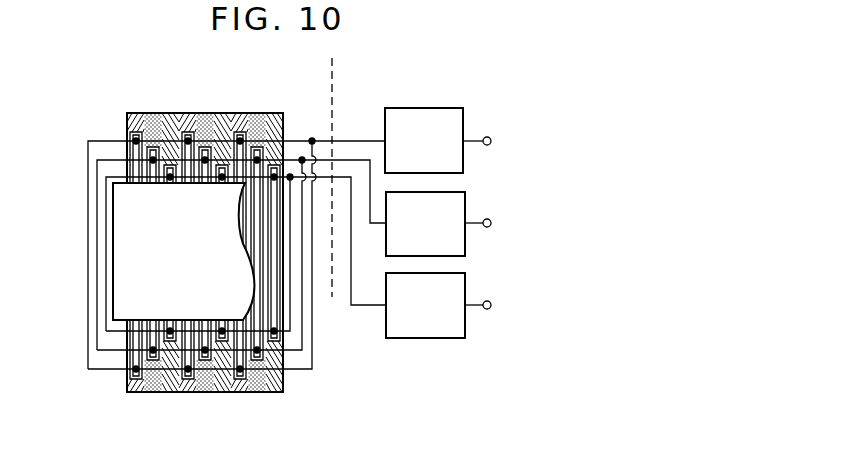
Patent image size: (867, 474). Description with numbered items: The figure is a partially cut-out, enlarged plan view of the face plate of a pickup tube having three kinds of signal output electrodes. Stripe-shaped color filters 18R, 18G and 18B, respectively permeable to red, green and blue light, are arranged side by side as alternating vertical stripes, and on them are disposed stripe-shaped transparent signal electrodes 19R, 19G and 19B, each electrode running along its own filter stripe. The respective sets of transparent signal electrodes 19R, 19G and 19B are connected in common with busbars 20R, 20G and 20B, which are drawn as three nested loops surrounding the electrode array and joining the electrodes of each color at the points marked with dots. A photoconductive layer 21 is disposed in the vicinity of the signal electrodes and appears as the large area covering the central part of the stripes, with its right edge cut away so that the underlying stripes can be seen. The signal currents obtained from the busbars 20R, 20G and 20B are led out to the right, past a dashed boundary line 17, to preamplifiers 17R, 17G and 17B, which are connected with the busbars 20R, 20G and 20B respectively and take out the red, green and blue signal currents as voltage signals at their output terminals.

The boundary line of photosensitive area / image pickup section 17 is at (316, 80).
The preamplifier 17R is at (433, 108).
The preamplifier 17G is at (457, 192).
The preamplifier 17B is at (457, 273).
The stripe-shaped color filter 18R is at (134, 113).
The stripe-shaped color filter 18G is at (150, 113).
The stripe-shaped color filter 18B is at (170, 113).
The stripe-shaped transparent signal electrode 19R is at (138, 392).
The stripe-shaped transparent signal electrode 19G is at (155, 393).
The stripe-shaped transparent signal electrode 19B is at (172, 392).
The busbar 20R is at (313, 340).
The busbar 20G is at (303, 320).
The busbar 20B is at (291, 300).
The photoconductive layer 21 is at (127, 280).